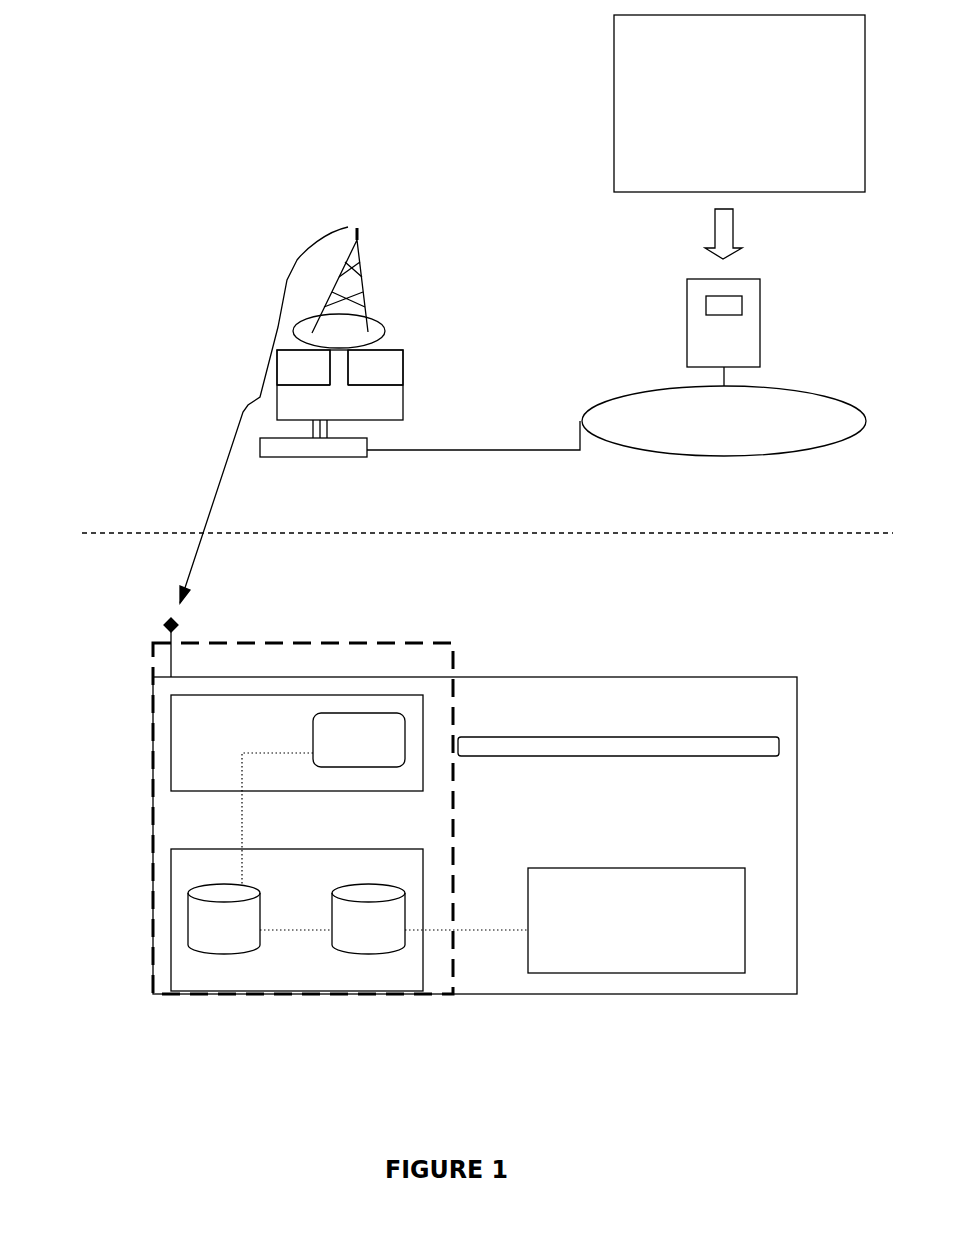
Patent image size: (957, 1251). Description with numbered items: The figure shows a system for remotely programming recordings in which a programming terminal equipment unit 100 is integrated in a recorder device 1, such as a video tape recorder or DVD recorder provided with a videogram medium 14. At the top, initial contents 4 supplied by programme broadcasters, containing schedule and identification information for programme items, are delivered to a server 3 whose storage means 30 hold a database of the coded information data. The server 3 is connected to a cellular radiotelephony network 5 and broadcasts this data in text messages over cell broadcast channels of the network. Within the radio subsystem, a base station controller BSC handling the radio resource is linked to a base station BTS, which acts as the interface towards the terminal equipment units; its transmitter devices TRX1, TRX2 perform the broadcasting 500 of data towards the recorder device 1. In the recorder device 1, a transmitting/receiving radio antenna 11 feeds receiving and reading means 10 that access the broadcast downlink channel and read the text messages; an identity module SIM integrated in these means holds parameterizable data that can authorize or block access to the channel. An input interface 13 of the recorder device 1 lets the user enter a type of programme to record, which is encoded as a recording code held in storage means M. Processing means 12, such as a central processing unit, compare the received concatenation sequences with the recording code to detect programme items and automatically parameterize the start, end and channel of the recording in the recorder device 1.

The recorder device 1 is at (815, 983).
The server 3 is at (750, 332).
The storage means 30 is at (718, 302).
The initial contents 4 is at (632, 121).
The cellular radiotelephony network 5 is at (608, 403).
The receiving and reading means 10 is at (213, 772).
The transmitting/receiving radio antenna 11 is at (170, 653).
The processing means 12 is at (205, 933).
The input interface 13 is at (567, 960).
The videogram medium 14 is at (707, 737).
The programming terminal equipment unit 100 is at (453, 643).
The broadcasting 500 is at (203, 547).
The transmitter device TRX1 is at (293, 368).
The transmitter device TRX2 is at (398, 368).
The base station BTS is at (403, 420).
The base station controller BSC is at (367, 457).
The identity module SIM is at (390, 725).
The storage means M is at (370, 950).